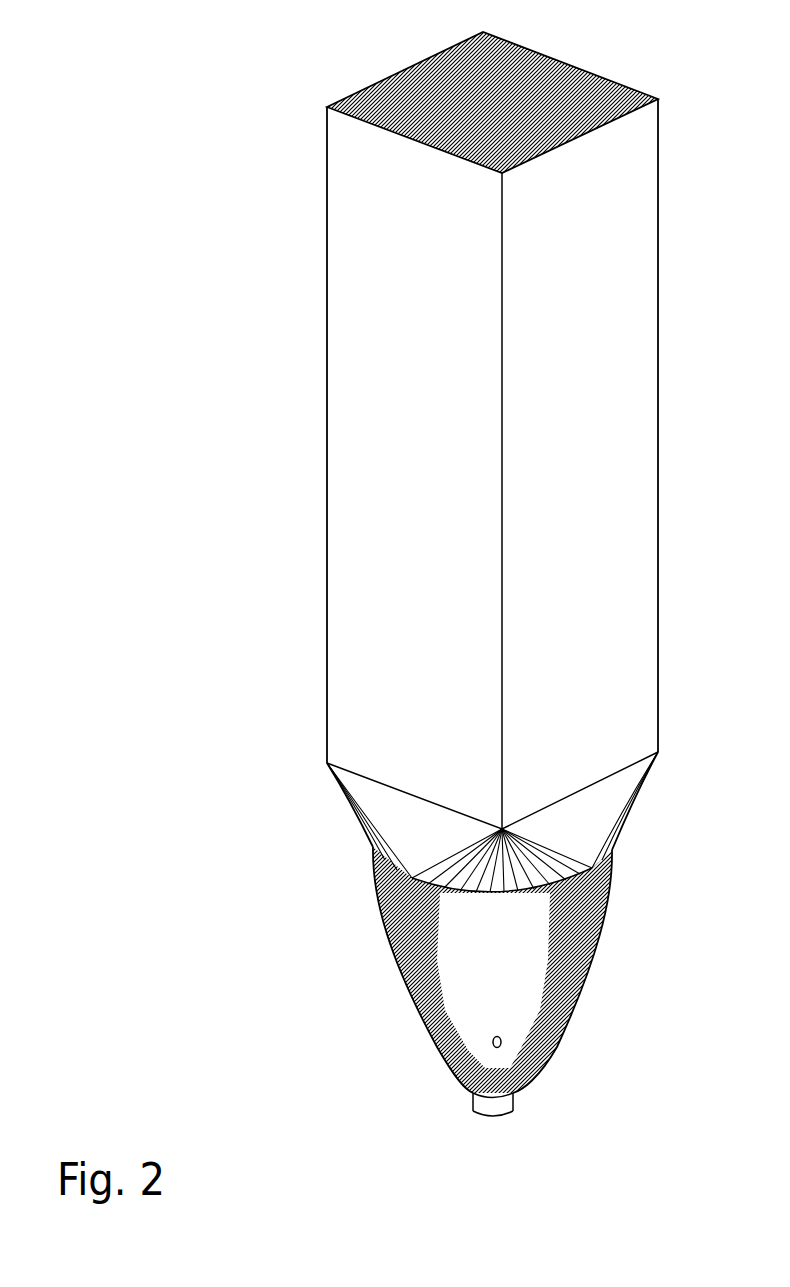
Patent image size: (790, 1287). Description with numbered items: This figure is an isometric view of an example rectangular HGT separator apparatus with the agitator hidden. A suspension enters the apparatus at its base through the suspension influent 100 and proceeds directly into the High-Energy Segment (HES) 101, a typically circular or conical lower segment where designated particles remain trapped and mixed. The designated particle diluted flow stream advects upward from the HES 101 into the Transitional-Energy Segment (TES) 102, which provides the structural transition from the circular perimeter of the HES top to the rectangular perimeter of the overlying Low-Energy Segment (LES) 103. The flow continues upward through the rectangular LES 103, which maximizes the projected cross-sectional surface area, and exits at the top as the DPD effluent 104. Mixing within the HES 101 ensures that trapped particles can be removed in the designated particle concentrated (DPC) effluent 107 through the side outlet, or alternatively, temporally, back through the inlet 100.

The suspension influent 100 is at (473, 1111).
The High-Energy Segment (HES) 101 is at (506, 982).
The Transitional-Energy Segment (TES) 102 is at (410, 819).
The Low-Energy Segment (LES) 103 is at (428, 488).
The Designated Particle Diluted (DPD) effluent 104 is at (420, 139).
The Designated Particle Concentrated (DPC) effluent 107 is at (501, 1040).